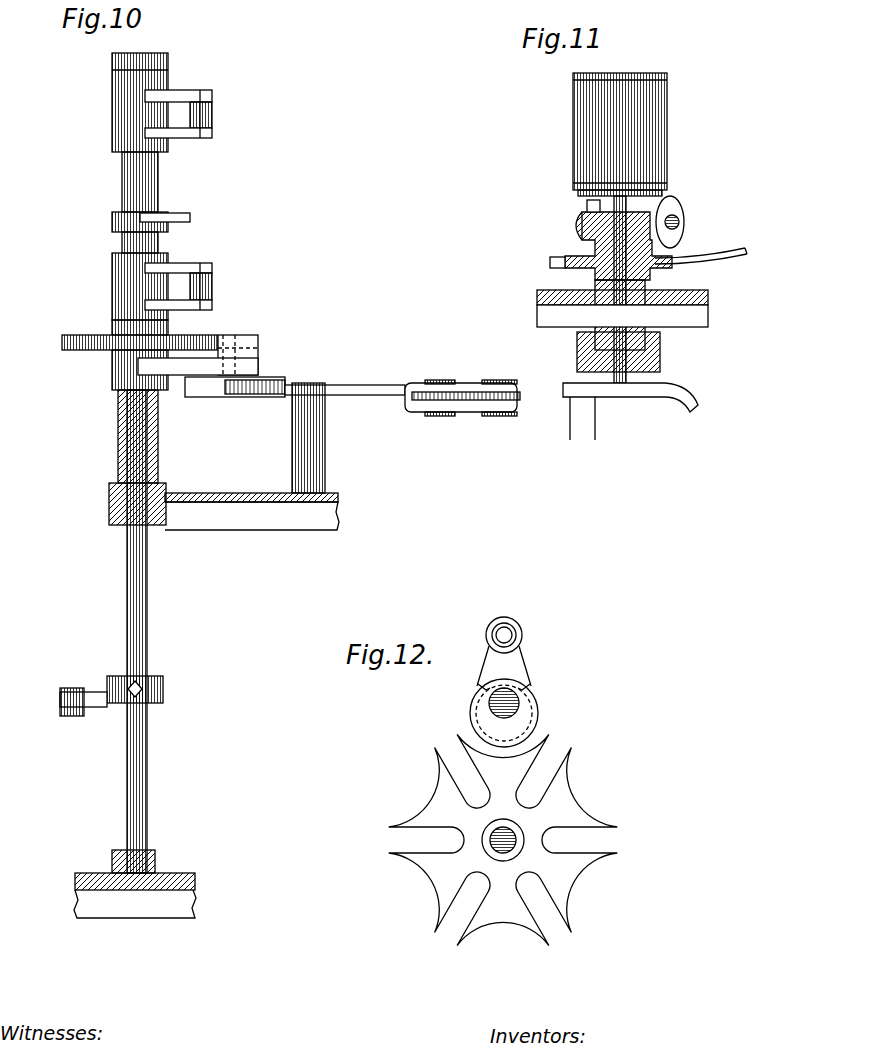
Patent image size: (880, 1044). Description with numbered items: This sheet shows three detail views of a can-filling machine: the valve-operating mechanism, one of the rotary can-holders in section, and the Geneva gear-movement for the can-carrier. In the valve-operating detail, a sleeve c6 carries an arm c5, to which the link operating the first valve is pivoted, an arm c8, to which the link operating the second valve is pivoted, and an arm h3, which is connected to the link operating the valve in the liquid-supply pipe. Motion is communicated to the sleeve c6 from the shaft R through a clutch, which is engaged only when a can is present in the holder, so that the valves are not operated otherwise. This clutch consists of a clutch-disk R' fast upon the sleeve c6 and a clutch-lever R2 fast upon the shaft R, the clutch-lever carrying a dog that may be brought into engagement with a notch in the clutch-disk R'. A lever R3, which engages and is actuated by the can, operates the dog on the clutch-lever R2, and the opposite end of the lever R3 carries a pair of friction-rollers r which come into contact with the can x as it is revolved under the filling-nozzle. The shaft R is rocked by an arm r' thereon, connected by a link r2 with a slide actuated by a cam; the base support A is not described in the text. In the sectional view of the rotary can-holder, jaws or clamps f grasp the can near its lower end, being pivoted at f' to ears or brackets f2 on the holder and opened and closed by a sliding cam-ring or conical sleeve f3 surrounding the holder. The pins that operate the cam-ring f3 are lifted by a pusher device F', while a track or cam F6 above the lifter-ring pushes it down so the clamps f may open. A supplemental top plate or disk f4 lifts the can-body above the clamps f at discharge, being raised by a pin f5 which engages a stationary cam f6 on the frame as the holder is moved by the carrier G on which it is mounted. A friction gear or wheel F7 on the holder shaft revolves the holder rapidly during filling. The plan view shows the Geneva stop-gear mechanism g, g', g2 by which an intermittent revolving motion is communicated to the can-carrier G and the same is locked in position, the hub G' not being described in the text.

In FIG. 10, the arm c5 is at (206, 90).
In FIG. 10, the sleeve c6 is at (158, 182).
In FIG. 10, the arm h3 is at (186, 213).
In FIG. 10, the arm c8 is at (206, 263).
In FIG. 10, the clutch-disk R' is at (139, 327).
In FIG. 10, the clutch-lever R2 is at (245, 338).
In FIG. 10, the lever R3 is at (274, 384).
In FIG. 10, the friction-rollers r is at (462, 407).
In FIG. 10, the base A is at (268, 508).
In FIG. 10, the shaft R is at (151, 631).
In FIG. 10, the arm r' is at (111, 701).
In FIG. 10, the link r2 is at (66, 708).
In FIG. 11, the can x is at (620, 134).
In FIG. 11, the supplemental top plate or disk f4 is at (648, 190).
In FIG. 11, the pin f5 is at (630, 212).
In FIG. 11, the ears or brackets f2 is at (580, 218).
In FIG. 11, the jaws or clamps f is at (632, 221).
In FIG. 11, the pusher device F' is at (548, 237).
In FIG. 11, the sliding cam-ring or conical sleeve f3 is at (590, 250).
In FIG. 11, the pivot f' is at (692, 230).
In FIG. 11, the track or cam F6 is at (742, 250).
In FIG. 11, the carrier G is at (606, 315).
In FIG. 11, the friction gear or wheel F7 is at (662, 350).
In FIG. 11, the stationary cam f6 is at (700, 400).
In FIG. 12, the Geneva stop-gear member g' is at (517, 651).
In FIG. 12, the Geneva stop-gear member g2 is at (533, 698).
In FIG. 12, the Geneva stop-gear member g is at (503, 840).
In FIG. 12, the hub G' is at (517, 833).